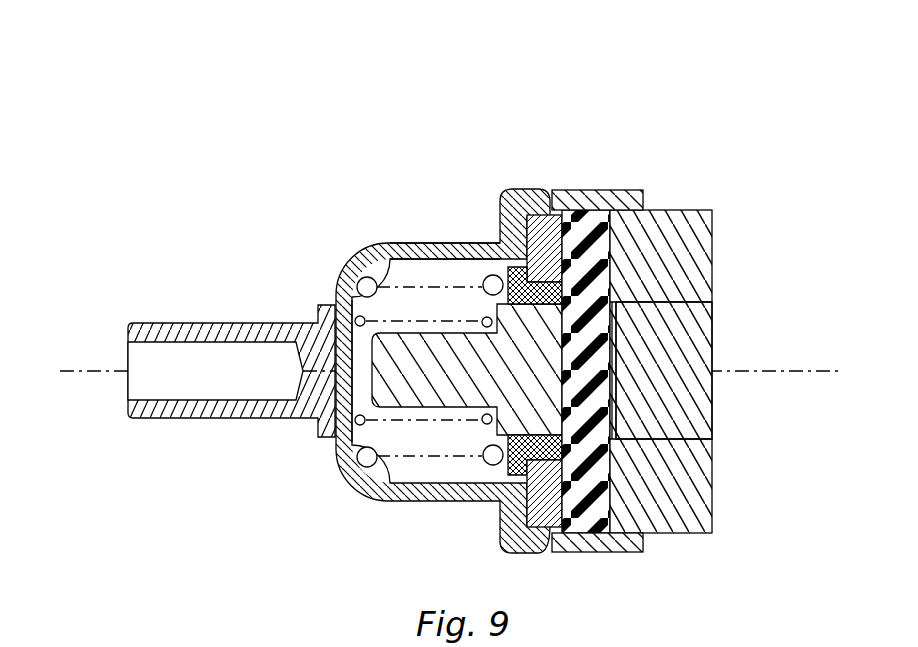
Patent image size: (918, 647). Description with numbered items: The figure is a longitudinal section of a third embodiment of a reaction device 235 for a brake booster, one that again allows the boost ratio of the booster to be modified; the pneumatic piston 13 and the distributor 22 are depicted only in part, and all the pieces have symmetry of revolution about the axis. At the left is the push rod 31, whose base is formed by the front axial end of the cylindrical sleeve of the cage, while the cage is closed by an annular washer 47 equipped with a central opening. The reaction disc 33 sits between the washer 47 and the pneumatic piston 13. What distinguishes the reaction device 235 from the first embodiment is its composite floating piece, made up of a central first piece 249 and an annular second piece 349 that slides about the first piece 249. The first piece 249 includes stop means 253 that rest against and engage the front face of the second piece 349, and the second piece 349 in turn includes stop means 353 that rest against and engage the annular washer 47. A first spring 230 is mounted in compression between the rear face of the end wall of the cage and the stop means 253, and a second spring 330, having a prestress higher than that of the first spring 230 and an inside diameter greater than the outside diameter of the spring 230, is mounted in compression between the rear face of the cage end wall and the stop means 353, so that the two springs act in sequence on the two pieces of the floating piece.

The pneumatic piston 13 is at (687, 262).
The distributor 22 is at (703, 325).
The push rod 31 is at (213, 328).
The reaction disc 33 is at (603, 210).
The annular washer 47 is at (550, 190).
The first spring 230 is at (337, 287).
The reaction device 235 is at (355, 187).
The central first piece 249 is at (437, 403).
The stop means 253 is at (497, 437).
The second spring 330 is at (367, 277).
The annular second piece 349 is at (482, 240).
The stop means 353 is at (508, 195).